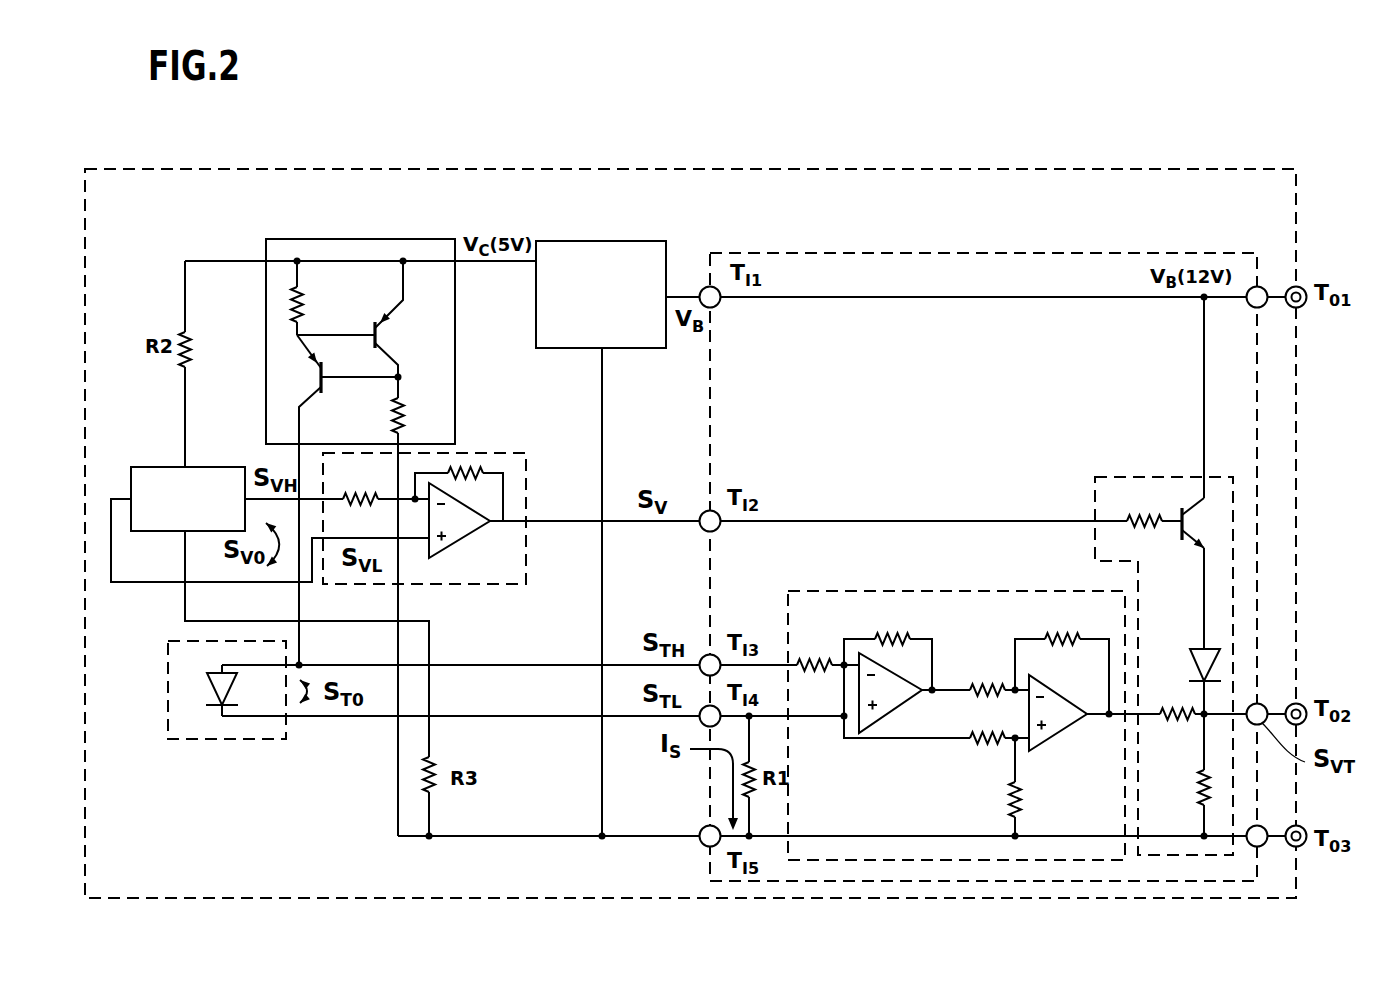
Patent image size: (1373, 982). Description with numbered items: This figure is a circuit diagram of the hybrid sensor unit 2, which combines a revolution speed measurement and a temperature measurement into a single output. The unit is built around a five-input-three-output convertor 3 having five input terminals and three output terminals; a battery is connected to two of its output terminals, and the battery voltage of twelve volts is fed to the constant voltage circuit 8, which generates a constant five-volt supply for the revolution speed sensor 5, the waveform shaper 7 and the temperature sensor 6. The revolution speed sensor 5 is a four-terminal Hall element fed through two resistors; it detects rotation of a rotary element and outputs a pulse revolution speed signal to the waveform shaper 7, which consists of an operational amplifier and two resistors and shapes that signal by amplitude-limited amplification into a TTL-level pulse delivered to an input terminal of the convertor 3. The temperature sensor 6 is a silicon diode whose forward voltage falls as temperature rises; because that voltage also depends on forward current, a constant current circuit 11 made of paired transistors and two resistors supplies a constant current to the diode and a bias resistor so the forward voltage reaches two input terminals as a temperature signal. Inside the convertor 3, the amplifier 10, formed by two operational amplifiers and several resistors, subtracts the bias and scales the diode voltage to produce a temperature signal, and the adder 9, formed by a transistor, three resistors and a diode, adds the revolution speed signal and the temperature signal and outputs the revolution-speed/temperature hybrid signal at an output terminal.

The hybrid sensor unit 2 is at (768, 168).
The five-input-three-output convertor 3 is at (860, 252).
The revolution speed sensor 5 is at (195, 467).
The temperature sensor 6 is at (208, 739).
The waveform shaper 7 is at (513, 584).
The constant voltage circuit 8 is at (583, 241).
The adder 9 is at (1122, 475).
The amplifier 10 is at (935, 590).
The constant current circuit 11 is at (327, 239).